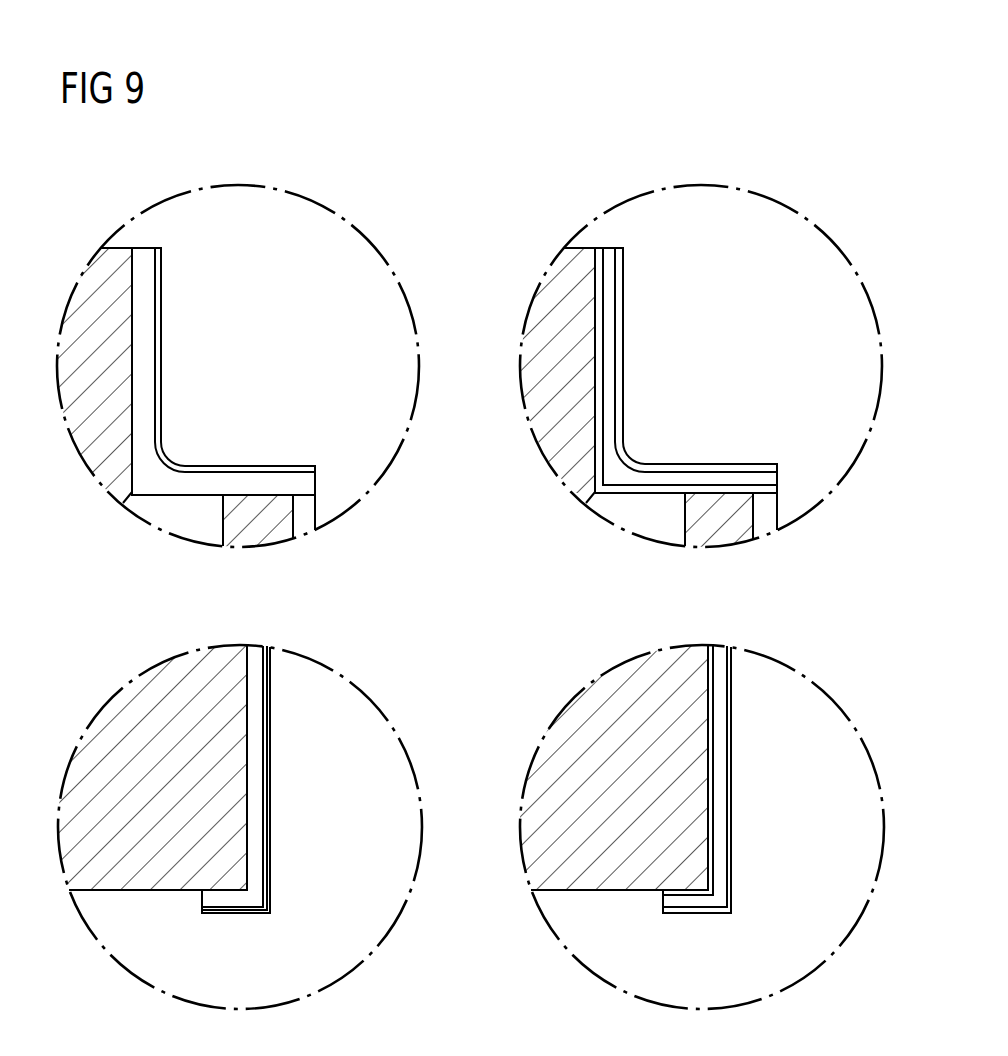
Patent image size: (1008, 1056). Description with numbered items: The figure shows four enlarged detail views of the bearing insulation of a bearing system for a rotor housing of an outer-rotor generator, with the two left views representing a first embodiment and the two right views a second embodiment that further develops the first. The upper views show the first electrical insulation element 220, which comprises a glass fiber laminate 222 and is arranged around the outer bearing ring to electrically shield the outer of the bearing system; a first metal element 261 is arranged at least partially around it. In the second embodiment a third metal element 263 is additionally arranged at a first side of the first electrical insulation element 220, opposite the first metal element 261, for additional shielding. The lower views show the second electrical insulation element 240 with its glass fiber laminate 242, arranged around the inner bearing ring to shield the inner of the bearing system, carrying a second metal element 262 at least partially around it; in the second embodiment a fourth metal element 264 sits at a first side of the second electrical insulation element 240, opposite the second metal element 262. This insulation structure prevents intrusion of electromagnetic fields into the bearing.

The first electrical insulation element 220 is at (457, 357).
The glass fiber laminate 222 is at (270, 257).
The first metal element 261 is at (157, 357).
The third metal element 263 is at (600, 407).
The second electrical insulation element 240 is at (532, 776).
The glass fiber laminate 242 is at (270, 783).
The second metal element 262 is at (267, 857).
The fourth metal element 264 is at (712, 835).